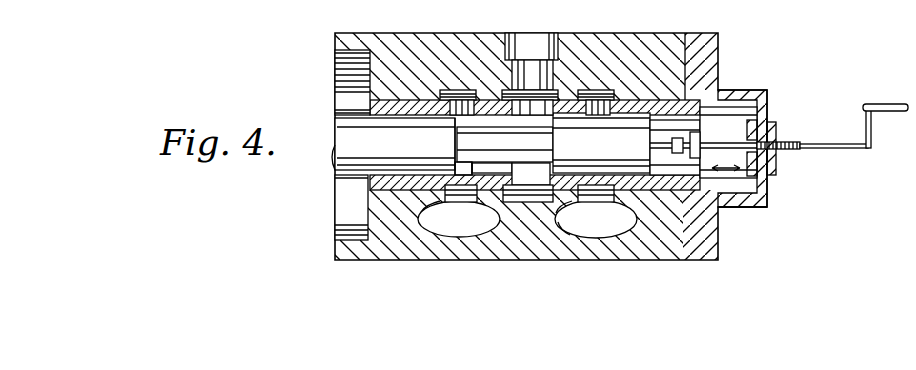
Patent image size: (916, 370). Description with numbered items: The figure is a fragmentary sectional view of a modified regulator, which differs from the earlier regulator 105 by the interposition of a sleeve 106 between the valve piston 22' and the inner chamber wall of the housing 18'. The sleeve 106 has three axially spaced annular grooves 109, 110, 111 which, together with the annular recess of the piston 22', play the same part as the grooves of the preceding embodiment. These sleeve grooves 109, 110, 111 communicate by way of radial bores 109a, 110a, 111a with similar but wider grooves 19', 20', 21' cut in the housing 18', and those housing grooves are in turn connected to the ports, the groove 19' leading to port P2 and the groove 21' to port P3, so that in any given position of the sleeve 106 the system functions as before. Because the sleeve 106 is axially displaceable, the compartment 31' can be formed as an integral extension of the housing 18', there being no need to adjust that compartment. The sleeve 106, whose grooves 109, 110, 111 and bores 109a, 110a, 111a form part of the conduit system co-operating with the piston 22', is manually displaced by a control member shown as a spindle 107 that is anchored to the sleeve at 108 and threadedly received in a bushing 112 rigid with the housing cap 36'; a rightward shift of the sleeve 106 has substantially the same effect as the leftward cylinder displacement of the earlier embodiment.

The housing 18' is at (551, 135).
The groove in housing 19' is at (417, 245).
The groove in housing 20' is at (530, 247).
The groove in housing 21' is at (639, 254).
The piston 22' is at (331, 207).
The compartment 31' is at (356, 62).
The housing cap 36' is at (761, 203).
The regulator 105 is at (740, 84).
The sleeve 106 is at (370, 94).
The spindle 107 is at (882, 104).
The anchorage of spindle to sleeve 108 is at (715, 126).
The annular groove of sleeve 109 is at (470, 203).
The radial bore 109a is at (460, 100).
The annular groove of sleeve 110 is at (548, 205).
The radial bore 110a is at (535, 105).
The annular groove of sleeve 111 is at (605, 205).
The radial bore 111a is at (600, 100).
The bushing 112 is at (778, 131).
The port P2 is at (458, 230).
The port P3 is at (607, 232).